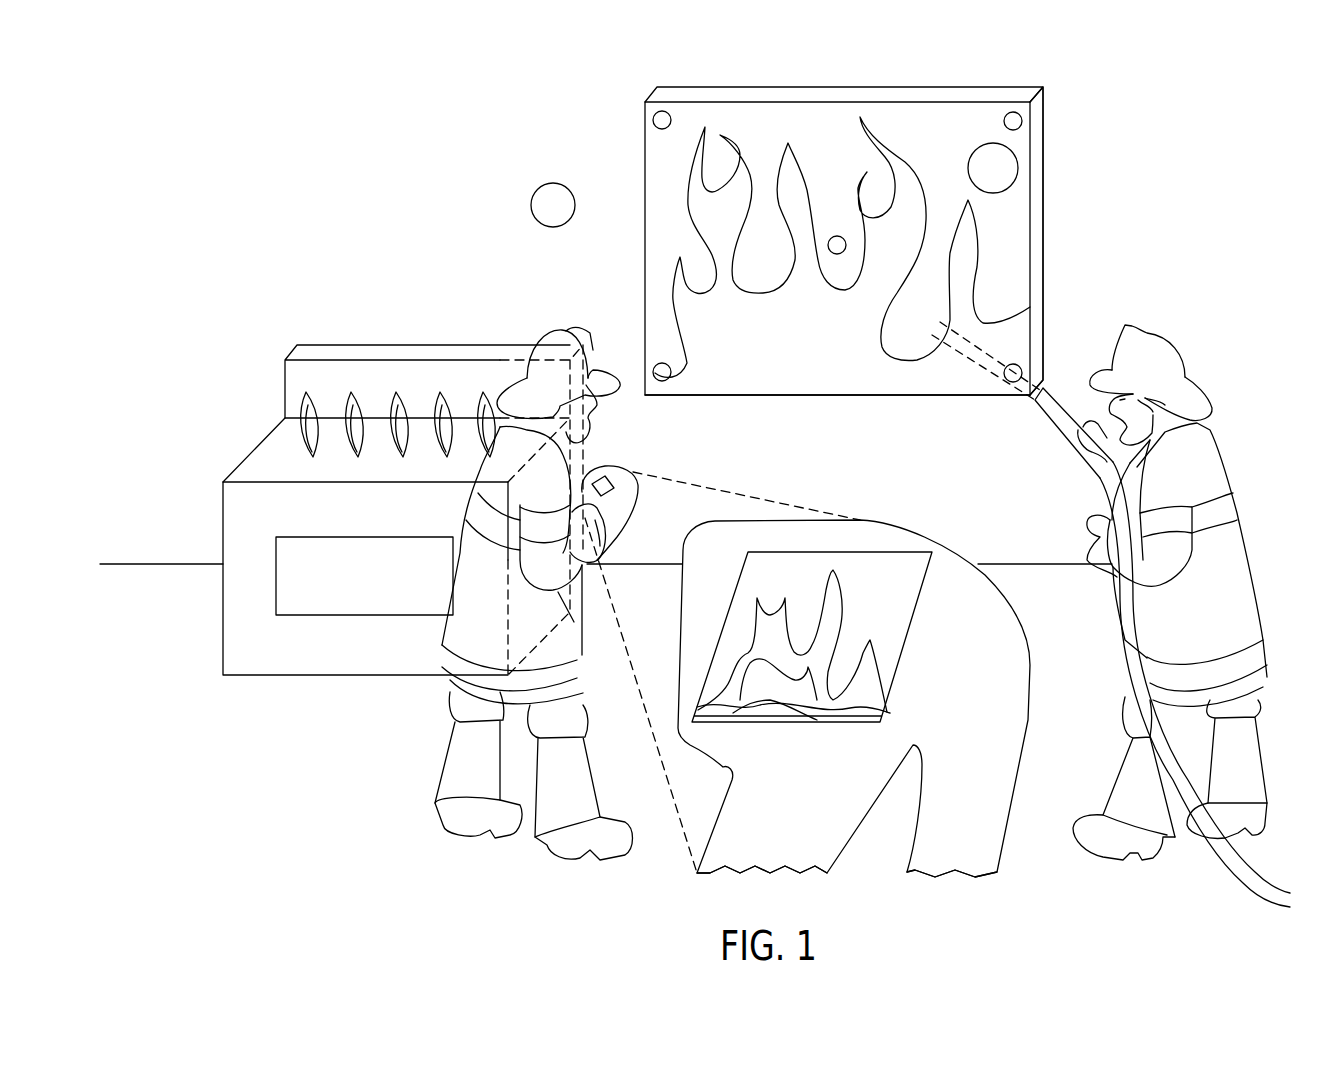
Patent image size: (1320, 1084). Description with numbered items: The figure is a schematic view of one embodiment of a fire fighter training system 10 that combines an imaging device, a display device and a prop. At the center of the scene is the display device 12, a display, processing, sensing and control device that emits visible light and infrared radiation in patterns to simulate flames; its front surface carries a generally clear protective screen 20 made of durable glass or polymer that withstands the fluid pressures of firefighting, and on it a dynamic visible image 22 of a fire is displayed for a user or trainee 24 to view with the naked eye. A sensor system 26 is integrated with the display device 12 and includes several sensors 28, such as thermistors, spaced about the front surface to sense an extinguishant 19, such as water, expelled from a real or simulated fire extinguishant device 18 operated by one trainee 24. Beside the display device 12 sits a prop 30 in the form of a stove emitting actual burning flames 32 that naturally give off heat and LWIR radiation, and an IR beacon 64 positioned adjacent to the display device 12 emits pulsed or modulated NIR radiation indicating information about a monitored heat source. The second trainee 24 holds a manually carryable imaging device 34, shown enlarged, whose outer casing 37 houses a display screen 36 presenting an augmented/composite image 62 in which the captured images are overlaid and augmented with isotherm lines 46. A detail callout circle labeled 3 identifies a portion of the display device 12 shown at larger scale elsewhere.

The training system 10 is at (1206, 330).
The display device 12 is at (1007, 233).
The fire extinguishant device 18 is at (1117, 489).
The extinguishant 19 is at (1047, 390).
The protective screen 20 is at (941, 112).
The visible image 22 is at (837, 342).
The user/trainee 24 is at (456, 632).
The sensor system 26 is at (789, 121).
The sensors 28 is at (654, 122).
The detail circle 3 is at (1020, 166).
The prop 30 is at (242, 644).
The flames 32 is at (300, 433).
The imaging device 34 is at (637, 468).
The display screen 36 is at (893, 563).
The casing 37 is at (803, 848).
The isotherm lines 46 is at (738, 717).
The augmented/composite image 62 is at (860, 568).
The beacon 64 is at (549, 183).